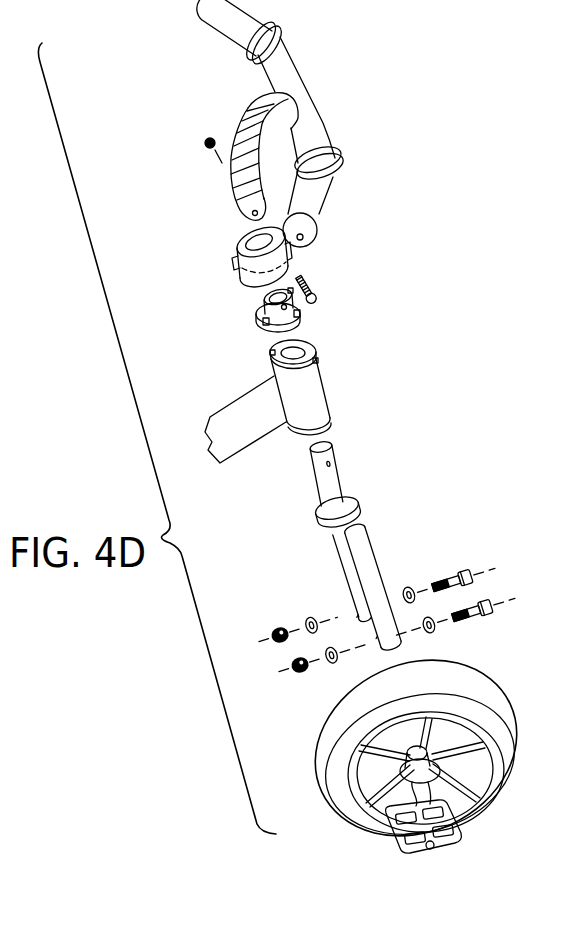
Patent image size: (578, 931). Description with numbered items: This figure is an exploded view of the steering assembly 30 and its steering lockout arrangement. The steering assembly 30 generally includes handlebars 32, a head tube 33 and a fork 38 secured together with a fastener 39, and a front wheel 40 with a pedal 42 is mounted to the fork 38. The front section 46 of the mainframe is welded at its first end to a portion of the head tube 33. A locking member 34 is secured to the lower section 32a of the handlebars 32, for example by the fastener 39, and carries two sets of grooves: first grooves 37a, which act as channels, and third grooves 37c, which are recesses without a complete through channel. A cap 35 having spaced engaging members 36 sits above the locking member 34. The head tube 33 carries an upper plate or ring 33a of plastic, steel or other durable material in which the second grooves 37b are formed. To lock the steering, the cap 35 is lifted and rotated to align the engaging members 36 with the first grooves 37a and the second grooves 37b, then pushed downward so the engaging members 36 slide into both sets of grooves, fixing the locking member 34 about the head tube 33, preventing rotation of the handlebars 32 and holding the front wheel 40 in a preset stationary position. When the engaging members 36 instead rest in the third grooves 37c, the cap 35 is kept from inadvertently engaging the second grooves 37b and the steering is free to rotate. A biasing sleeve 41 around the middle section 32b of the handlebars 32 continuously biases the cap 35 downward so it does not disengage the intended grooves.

The steering assembly 30 is at (318, 323).
The handlebars 32 is at (328, 127).
The lower section of handlebars 32a is at (237, 231).
The middle section of handlebars 32b is at (228, 130).
The head tube 33 is at (330, 397).
The upper plate or ring 33a is at (267, 373).
The locking member 34 is at (318, 292).
The cap 35 is at (222, 248).
The engaging members 36 is at (248, 280).
The first grooves 37a is at (262, 305).
The second grooves 37b is at (273, 355).
The third grooves 37c is at (290, 289).
The fork 38 is at (368, 562).
The fastener 39 is at (315, 302).
The front wheel 40 is at (497, 700).
The biasing sleeve 41 is at (256, 113).
The pedal 42 is at (460, 837).
The front section 46 is at (238, 448).